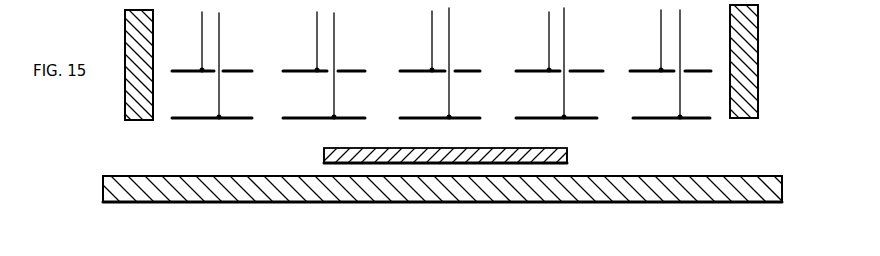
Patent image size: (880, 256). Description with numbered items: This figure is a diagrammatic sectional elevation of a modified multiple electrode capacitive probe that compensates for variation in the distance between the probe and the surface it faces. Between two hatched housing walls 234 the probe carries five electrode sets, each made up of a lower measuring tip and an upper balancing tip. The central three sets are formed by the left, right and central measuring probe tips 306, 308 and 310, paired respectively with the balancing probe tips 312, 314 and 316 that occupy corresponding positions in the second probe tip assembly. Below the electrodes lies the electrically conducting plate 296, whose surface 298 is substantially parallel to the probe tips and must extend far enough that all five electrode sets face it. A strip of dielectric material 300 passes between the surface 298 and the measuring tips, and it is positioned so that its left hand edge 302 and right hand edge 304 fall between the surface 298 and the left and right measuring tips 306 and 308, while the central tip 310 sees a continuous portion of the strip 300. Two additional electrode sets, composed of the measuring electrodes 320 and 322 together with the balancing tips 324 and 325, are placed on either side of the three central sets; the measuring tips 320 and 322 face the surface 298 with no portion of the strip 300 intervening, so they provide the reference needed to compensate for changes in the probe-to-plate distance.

The housing wall 234 is at (747, 72).
The electrically conducting plate 296 is at (207, 196).
The plate surface 298 is at (172, 177).
The dielectric strip 300 is at (448, 150).
The left hand edge 302 is at (324, 152).
The right hand edge 304 is at (567, 153).
The left measuring probe tip 306 is at (347, 117).
The right measuring probe tip 308 is at (577, 117).
The central measuring probe tip 310 is at (460, 117).
The balancing probe tip 312 is at (347, 70).
The balancing probe tip 314 is at (577, 70).
The balancing probe tip 316 is at (460, 70).
The measuring electrode 320 is at (232, 117).
The measuring electrode 322 is at (688, 117).
The balancing tip 324 is at (232, 70).
The balancing tip 325 is at (688, 70).